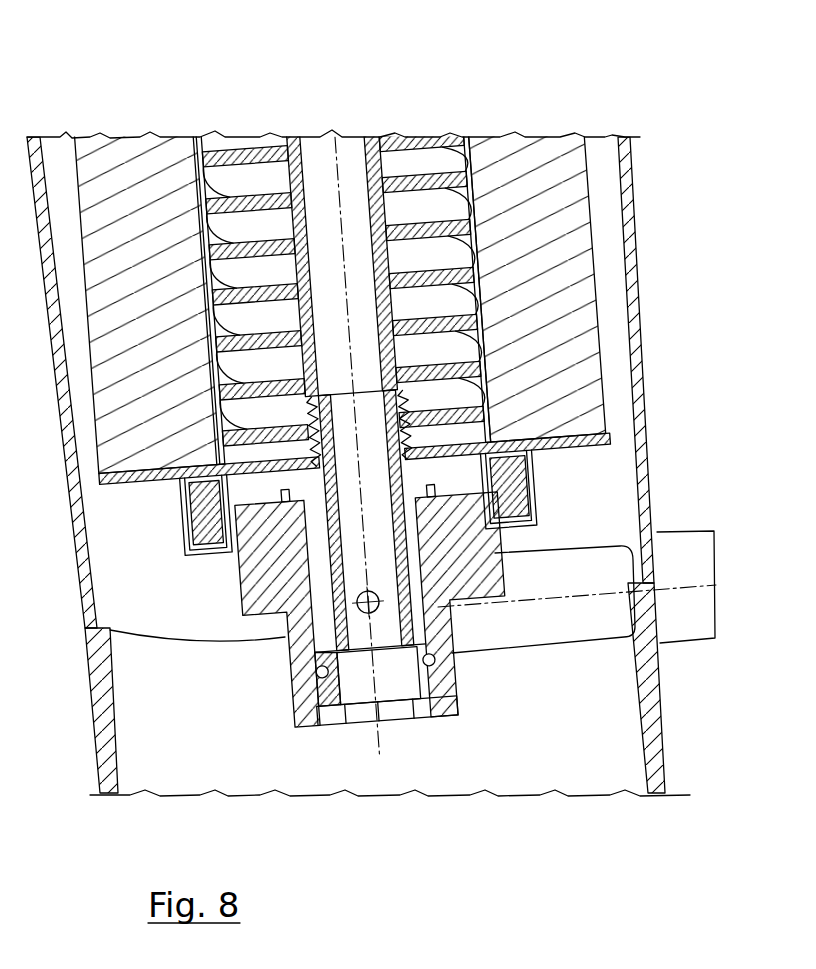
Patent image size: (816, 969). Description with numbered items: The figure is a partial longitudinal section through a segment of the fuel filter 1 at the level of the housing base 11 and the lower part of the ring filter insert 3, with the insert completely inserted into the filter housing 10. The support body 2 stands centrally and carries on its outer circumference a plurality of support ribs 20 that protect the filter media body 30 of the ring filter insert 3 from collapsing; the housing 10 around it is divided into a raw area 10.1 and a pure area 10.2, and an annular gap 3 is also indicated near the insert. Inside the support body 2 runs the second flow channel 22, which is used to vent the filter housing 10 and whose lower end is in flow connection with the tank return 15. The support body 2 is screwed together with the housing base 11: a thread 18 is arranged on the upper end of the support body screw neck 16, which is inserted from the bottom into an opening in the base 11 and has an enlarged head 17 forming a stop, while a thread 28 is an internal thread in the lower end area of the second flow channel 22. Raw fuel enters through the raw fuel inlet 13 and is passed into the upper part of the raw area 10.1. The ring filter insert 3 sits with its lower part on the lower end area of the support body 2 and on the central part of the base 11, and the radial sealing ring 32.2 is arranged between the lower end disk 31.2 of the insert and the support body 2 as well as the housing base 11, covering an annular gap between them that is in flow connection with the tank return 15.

The fuel filter 1 is at (605, 90).
The support body 2 is at (386, 136).
The ring filter insert 3 is at (592, 177).
The filter housing 10 is at (634, 249).
The raw area 10.1 is at (612, 335).
The pure area 10.2 is at (206, 170).
The housing base 11 is at (238, 598).
The raw fuel inlet 13 is at (684, 538).
The tank return 15 is at (410, 662).
The support body screw neck 16 is at (324, 610).
The enlarged head 17 is at (323, 725).
The thread 18 is at (388, 395).
The support ribs 20 is at (446, 172).
The second flow channel 22 is at (316, 176).
The thread 28 is at (318, 428).
The filter media body 30 is at (126, 197).
The lower end disk 31.2 is at (134, 481).
The radial sealing ring 32.2 is at (216, 553).